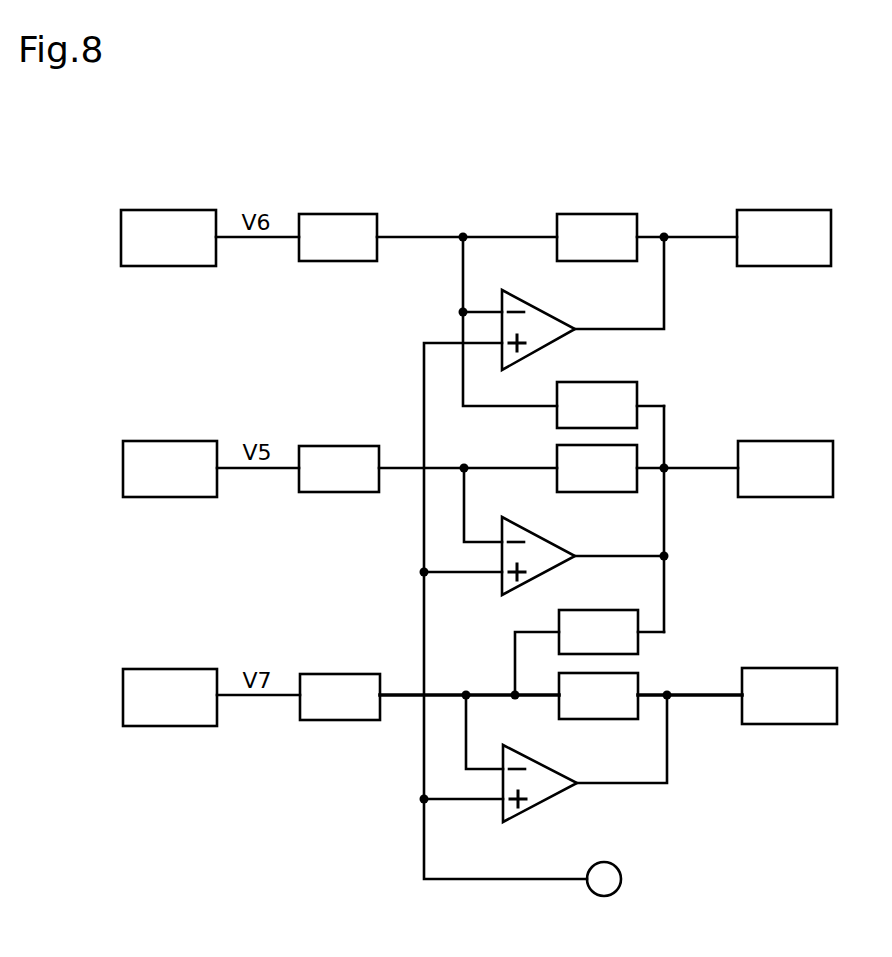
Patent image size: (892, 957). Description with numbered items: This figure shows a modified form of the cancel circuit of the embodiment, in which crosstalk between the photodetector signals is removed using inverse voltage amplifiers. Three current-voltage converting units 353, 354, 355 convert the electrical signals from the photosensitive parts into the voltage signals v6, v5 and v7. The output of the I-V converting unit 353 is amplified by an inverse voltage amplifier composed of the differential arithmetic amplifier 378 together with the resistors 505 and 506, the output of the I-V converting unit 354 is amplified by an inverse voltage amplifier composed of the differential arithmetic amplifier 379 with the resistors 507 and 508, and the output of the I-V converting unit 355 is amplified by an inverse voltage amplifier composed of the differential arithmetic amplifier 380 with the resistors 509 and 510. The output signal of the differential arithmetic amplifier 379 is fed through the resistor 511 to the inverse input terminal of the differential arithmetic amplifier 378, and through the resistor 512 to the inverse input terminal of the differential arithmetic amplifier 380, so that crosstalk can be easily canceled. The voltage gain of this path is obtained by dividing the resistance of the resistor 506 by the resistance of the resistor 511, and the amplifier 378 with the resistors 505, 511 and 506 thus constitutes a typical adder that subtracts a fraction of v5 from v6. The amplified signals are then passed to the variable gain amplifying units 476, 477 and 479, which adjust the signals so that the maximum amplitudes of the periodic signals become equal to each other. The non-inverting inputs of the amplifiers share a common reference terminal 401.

The current-voltage converting unit 353 is at (194, 210).
The current-voltage converting unit 354 is at (195, 441).
The current-voltage converting unit 355 is at (196, 669).
The resistor 505 is at (368, 214).
The resistor 506 is at (624, 214).
The resistor 507 is at (368, 446).
The resistor 508 is at (557, 450).
The resistor 509 is at (368, 674).
The resistor 510 is at (640, 680).
The resistor 511 is at (640, 388).
The resistor 512 is at (589, 610).
The differential arithmetic amplifier 378 is at (553, 312).
The differential arithmetic amplifier 379 is at (553, 540).
The differential arithmetic amplifier 380 is at (555, 768).
The variable gain amplifying unit 476 is at (810, 210).
The variable gain amplifying unit 477 is at (810, 441).
The variable gain amplifying unit 479 is at (812, 668).
The reference voltage terminal 401 is at (608, 862).